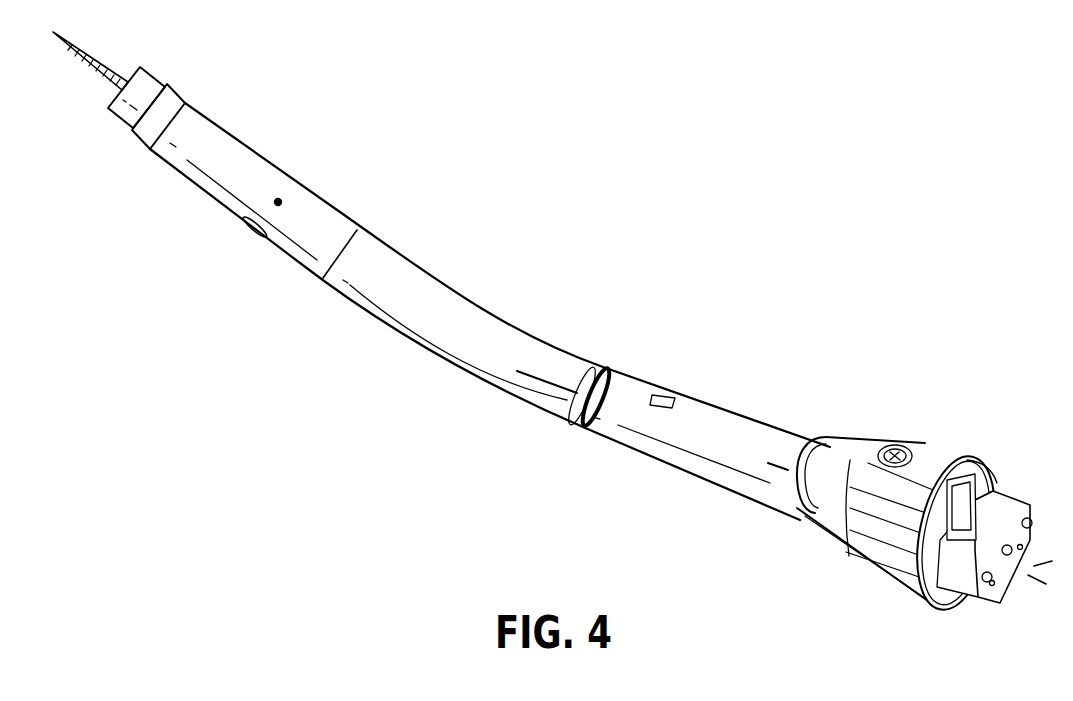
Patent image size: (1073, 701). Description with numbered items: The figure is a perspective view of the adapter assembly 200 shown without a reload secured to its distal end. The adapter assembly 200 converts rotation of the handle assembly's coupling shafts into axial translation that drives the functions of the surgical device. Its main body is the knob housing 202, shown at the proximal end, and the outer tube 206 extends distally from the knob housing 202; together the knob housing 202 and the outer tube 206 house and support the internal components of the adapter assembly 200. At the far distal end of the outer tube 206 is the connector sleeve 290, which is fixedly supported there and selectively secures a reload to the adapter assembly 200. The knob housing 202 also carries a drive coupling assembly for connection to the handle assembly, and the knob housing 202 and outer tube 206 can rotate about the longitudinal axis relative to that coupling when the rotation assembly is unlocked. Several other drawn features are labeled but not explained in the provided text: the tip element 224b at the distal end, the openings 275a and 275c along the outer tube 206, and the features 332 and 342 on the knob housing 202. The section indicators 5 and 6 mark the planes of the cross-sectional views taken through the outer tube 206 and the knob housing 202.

The adapter assembly 200 is at (768, 321).
The needle electrode tip 224b is at (90, 53).
The connector sleeve 290 is at (167, 82).
The aperture 275c is at (278, 202).
The slot 275a is at (253, 228).
The outer tube 206 is at (583, 355).
The knob housing 202 is at (928, 447).
The screw boss 332 is at (893, 446).
The connector latch 342 is at (987, 467).
The section line 5 is at (780, 466).
The section line 6 is at (538, 378).